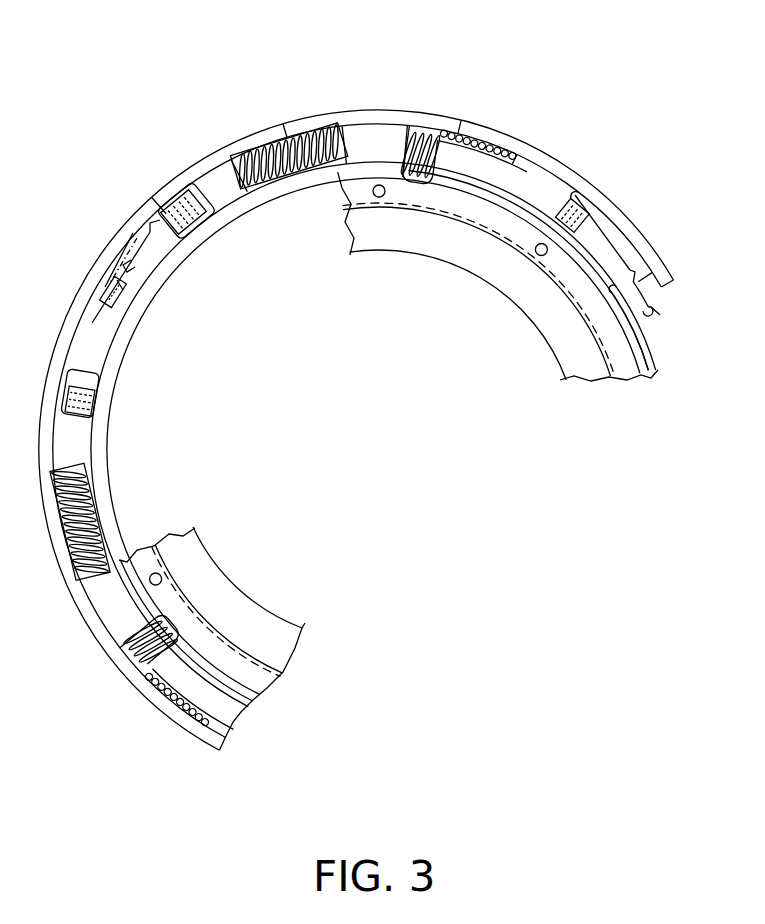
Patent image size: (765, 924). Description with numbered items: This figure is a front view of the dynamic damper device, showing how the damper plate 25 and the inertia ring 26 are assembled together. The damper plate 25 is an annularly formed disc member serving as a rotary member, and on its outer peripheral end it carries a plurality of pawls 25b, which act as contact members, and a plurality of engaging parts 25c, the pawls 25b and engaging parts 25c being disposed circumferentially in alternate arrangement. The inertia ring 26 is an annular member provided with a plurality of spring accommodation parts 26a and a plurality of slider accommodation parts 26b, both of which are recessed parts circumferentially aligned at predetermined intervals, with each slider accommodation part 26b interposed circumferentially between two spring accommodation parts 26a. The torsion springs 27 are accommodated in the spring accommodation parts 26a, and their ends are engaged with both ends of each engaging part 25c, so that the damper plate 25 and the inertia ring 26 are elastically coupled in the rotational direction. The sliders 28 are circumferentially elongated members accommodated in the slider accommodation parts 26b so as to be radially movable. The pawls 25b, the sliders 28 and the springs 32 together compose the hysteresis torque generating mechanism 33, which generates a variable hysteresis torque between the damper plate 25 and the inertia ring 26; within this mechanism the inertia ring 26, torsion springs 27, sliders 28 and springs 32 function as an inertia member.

The damper plate 25 is at (373, 406).
The pawl 25b is at (367, 278).
The engaging part 25c is at (388, 98).
The inertia ring 26 is at (356, 421).
The spring accommodation part 26a is at (285, 117).
The slider accommodation part 26b is at (96, 231).
The torsion spring 27 is at (288, 396).
The slider 28 is at (134, 186).
The spring 32 is at (312, 267).
The hysteresis torque generating mechanism 33 is at (72, 280).